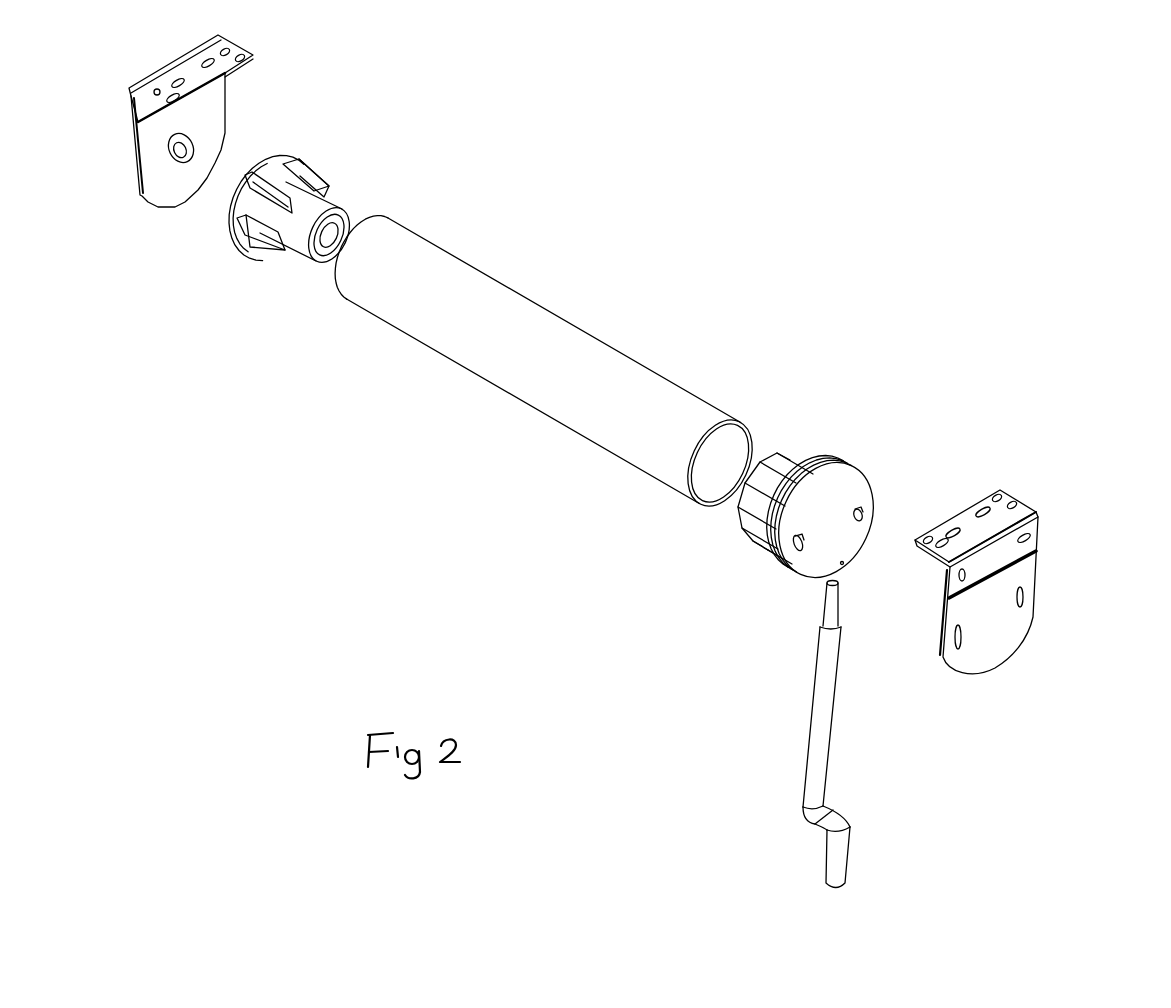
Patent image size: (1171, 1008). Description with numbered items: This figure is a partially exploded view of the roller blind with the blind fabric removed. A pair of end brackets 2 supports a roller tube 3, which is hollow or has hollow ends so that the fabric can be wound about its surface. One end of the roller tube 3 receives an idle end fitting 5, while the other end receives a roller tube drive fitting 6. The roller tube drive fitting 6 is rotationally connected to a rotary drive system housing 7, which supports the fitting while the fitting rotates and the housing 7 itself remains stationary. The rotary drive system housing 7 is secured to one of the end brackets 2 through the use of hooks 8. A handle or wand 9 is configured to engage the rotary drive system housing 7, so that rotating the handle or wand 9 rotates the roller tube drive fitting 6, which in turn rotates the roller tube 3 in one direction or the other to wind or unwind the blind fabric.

The end brackets 2 is at (250, 73).
The roller tube 3 is at (543, 323).
The idle end fitting 5 is at (317, 188).
The roller tube drive fitting 6 is at (783, 452).
The rotary drive system housing 7 is at (840, 450).
The hooks 8 is at (875, 515).
The handle or wand 9 is at (823, 757).